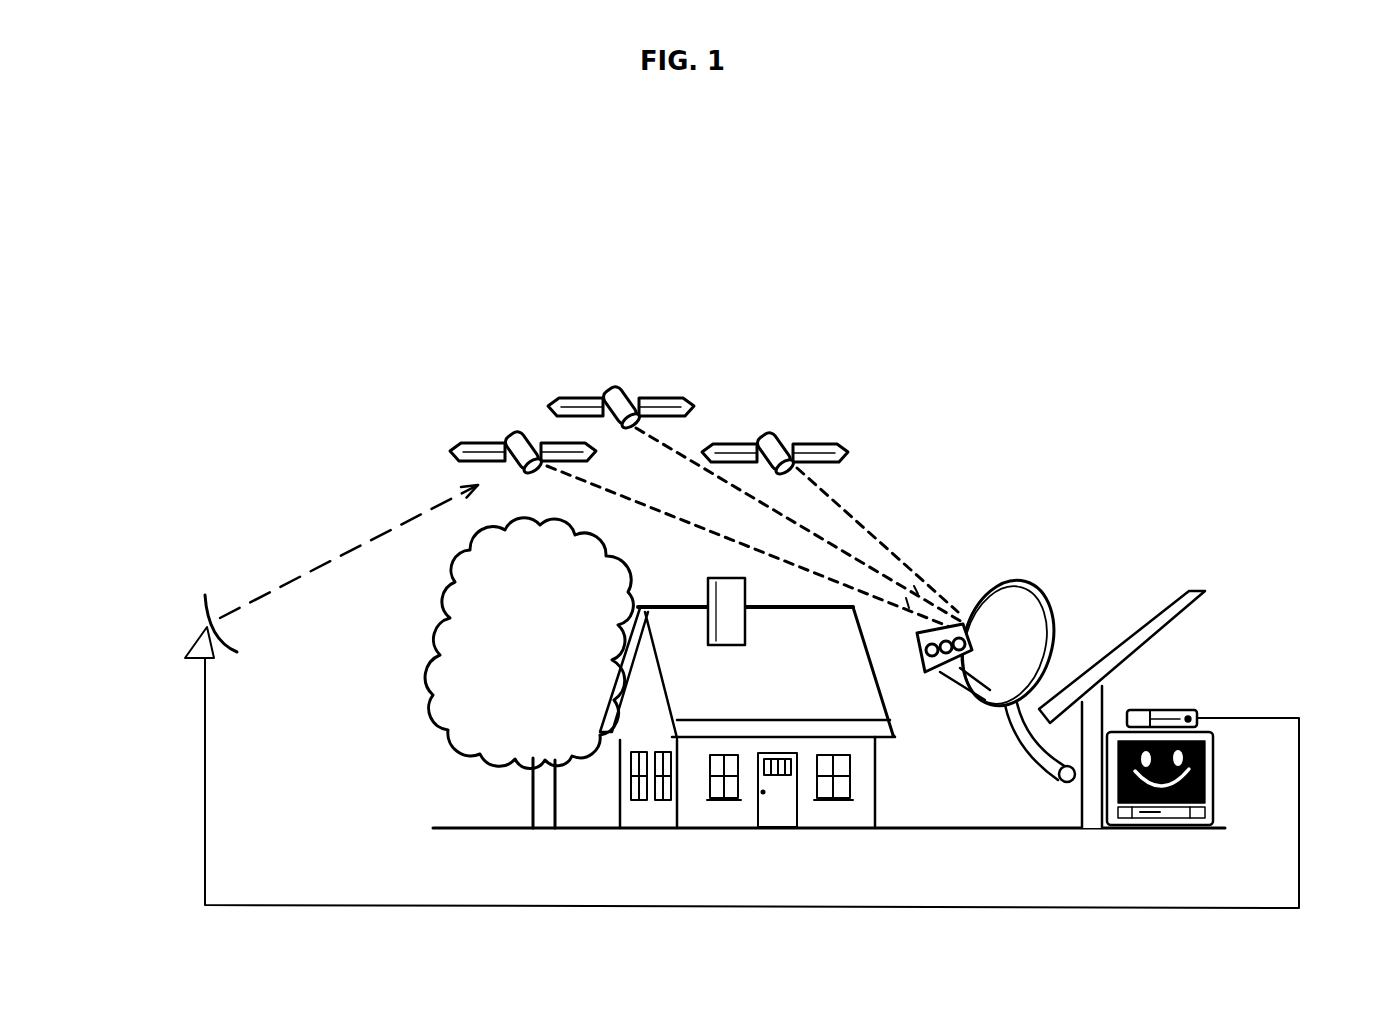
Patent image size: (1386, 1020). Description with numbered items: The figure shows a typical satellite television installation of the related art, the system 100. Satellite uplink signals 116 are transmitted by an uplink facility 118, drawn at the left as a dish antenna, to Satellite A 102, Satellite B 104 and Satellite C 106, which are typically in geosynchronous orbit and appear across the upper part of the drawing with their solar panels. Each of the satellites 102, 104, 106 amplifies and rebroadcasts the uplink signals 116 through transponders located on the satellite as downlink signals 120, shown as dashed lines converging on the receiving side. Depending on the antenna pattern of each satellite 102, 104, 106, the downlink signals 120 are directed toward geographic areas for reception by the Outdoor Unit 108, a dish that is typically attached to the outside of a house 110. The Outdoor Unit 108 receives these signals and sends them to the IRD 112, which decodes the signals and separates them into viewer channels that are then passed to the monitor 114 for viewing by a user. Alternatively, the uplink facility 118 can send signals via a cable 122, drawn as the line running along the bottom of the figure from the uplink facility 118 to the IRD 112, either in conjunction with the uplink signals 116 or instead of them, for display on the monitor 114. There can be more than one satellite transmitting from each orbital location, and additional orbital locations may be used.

The system 100 is at (828, 192).
The Satellite A 102 is at (489, 428).
The Satellite B 104 is at (786, 420).
The Satellite C 106 is at (687, 388).
The Outdoor Unit 108 is at (1023, 575).
The house 110 is at (1140, 603).
The IRD 112 is at (1162, 703).
The monitor 114 is at (1220, 760).
The satellite uplink signals 116 is at (297, 567).
The uplink facility 118 is at (192, 632).
The downlink signals 120 is at (873, 533).
The cable 122 is at (1278, 717).